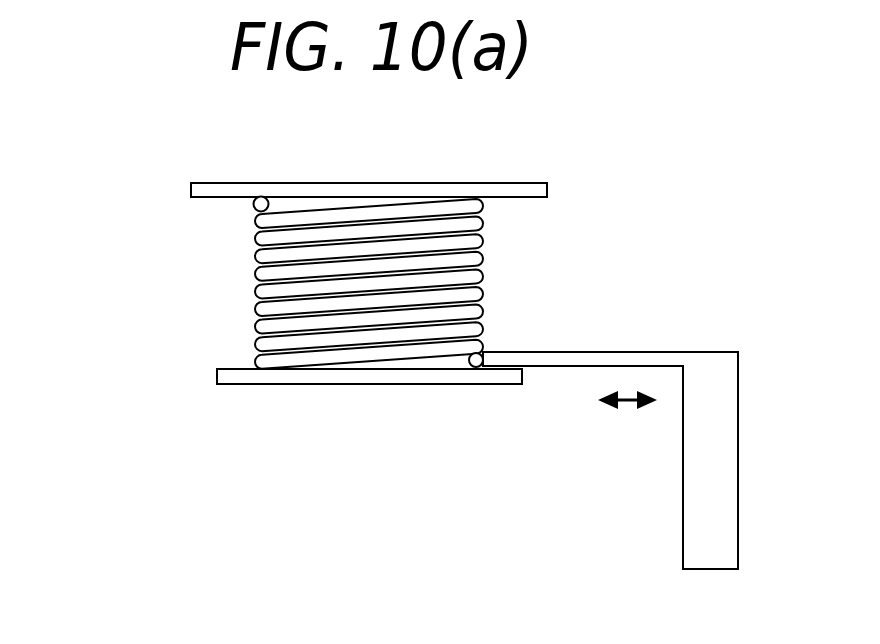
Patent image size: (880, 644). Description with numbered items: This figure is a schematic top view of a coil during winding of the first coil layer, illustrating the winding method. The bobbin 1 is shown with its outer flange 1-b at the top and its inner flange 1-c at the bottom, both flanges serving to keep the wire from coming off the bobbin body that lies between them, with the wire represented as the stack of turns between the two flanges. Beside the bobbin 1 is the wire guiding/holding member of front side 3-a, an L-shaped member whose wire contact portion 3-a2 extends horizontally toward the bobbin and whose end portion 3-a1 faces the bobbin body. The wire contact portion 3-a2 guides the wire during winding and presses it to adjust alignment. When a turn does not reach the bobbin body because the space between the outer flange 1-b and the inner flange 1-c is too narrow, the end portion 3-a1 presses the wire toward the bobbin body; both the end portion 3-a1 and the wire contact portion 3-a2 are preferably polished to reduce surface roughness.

The bobbin 1 is at (73, 155).
The outer flange 1-b is at (200, 190).
The inner flange 1-c is at (228, 378).
The wire guiding/holding member of front side 3-a is at (727, 449).
The end portion 3-a1 is at (487, 357).
The wire contact portion 3-a2 is at (632, 357).